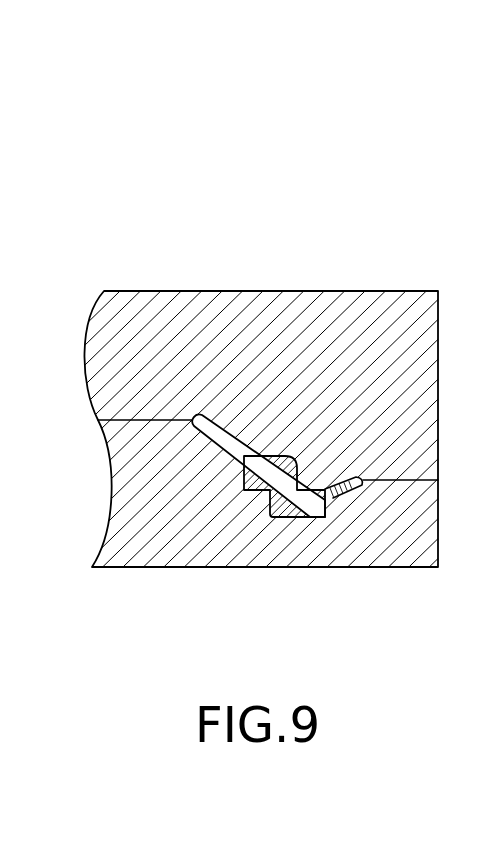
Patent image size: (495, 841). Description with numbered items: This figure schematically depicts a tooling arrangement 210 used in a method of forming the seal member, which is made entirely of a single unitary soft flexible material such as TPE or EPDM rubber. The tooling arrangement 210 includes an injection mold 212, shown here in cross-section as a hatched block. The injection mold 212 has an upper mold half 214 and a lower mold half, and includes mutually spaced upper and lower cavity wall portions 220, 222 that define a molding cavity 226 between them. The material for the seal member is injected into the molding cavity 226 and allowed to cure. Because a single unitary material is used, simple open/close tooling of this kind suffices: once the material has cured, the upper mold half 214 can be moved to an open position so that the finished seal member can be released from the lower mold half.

The tooling arrangement 210 is at (247, 406).
The injection mold 212 is at (377, 588).
The upper mold half 214 is at (332, 305).
The upper cavity wall portion 220 is at (276, 438).
The lower cavity wall portion 222 is at (300, 517).
The molding cavity 226 is at (247, 472).